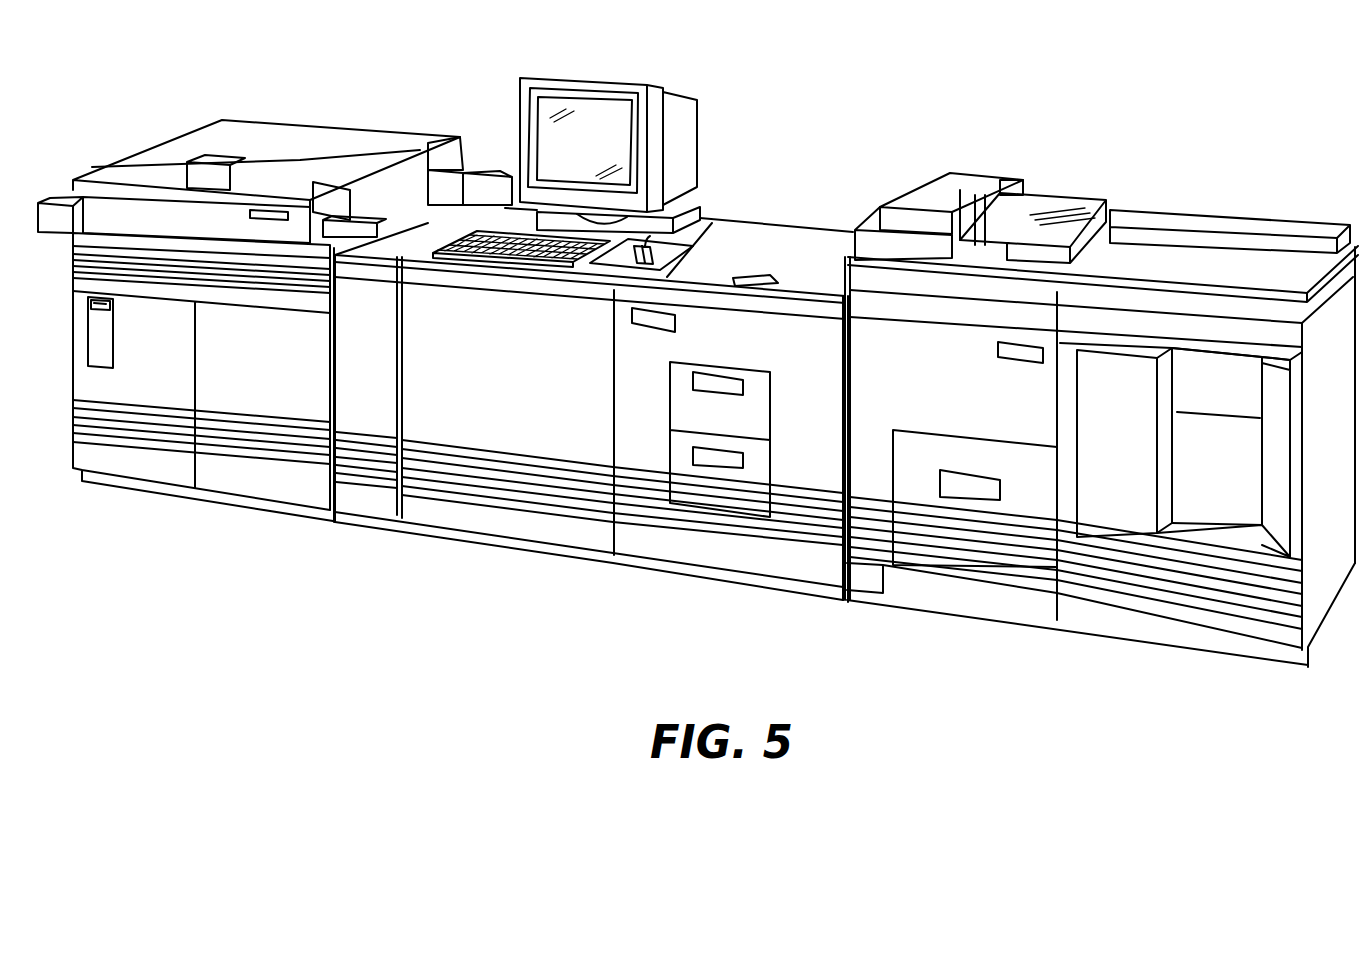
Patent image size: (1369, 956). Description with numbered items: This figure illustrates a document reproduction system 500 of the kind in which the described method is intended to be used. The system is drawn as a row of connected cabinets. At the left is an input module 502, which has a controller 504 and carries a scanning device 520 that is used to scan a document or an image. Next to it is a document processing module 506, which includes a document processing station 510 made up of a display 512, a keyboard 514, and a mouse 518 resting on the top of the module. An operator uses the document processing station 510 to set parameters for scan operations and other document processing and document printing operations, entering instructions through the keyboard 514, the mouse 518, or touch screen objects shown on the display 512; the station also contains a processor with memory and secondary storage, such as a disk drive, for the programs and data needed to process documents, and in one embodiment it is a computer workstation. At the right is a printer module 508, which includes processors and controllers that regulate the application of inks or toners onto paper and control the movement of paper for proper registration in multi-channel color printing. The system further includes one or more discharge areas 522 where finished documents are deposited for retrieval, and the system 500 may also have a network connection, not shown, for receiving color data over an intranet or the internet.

The document reproduction system 500 is at (776, 56).
The input module 502 is at (275, 158).
The controller 504 is at (171, 364).
The document processing module 506 is at (608, 312).
The printer module 508 is at (1101, 402).
The document processing station 510 is at (586, 127).
The display 512 is at (543, 133).
The keyboard 514 is at (527, 258).
The mouse 518 is at (630, 267).
The scanning device 520 is at (168, 155).
The discharge areas 522 is at (1235, 484).